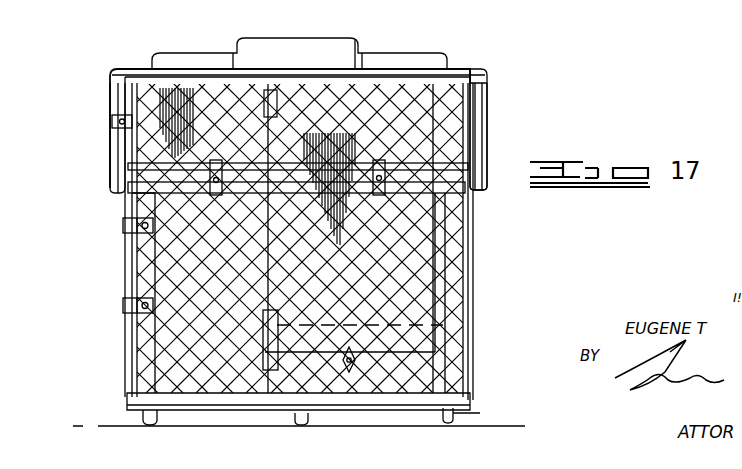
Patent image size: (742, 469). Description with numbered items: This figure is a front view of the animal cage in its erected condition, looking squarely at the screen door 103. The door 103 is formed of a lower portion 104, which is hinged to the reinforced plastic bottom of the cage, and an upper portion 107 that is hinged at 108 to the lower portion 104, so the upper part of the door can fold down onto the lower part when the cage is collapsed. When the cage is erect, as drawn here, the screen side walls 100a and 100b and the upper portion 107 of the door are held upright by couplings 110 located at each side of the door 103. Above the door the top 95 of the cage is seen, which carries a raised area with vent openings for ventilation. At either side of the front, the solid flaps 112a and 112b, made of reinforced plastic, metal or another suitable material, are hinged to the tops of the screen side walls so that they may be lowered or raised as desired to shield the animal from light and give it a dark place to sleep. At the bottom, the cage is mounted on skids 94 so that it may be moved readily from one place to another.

The skids 94 is at (143, 418).
The top 95 is at (201, 50).
The side wall 100a is at (118, 165).
The side wall 100b is at (478, 98).
The door 103 is at (453, 258).
The lower portion of door 104 is at (128, 288).
The upper portion of door 107 is at (464, 118).
The hinge 108 is at (387, 175).
The couplings 110 is at (112, 122).
The solid flap 112a is at (112, 96).
The solid flap 112b is at (484, 140).